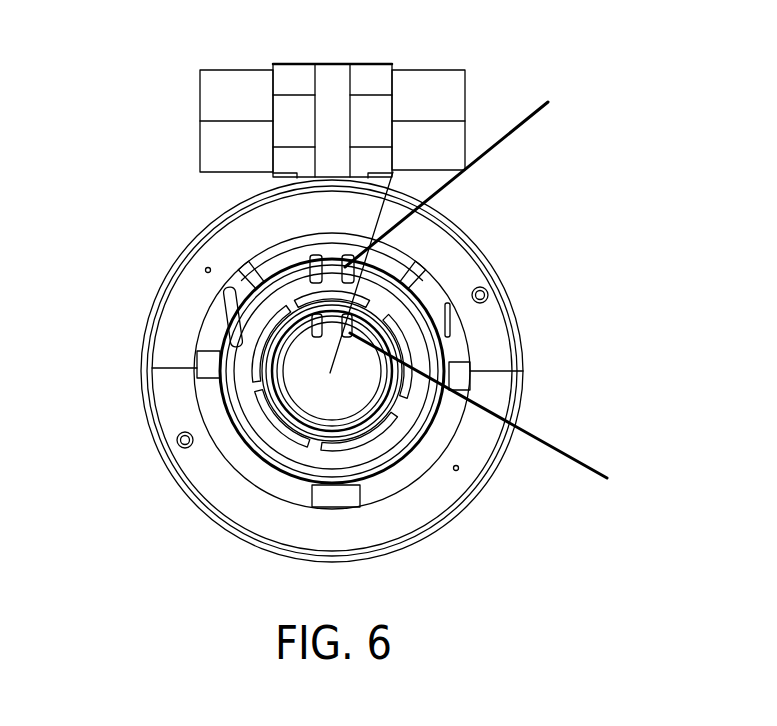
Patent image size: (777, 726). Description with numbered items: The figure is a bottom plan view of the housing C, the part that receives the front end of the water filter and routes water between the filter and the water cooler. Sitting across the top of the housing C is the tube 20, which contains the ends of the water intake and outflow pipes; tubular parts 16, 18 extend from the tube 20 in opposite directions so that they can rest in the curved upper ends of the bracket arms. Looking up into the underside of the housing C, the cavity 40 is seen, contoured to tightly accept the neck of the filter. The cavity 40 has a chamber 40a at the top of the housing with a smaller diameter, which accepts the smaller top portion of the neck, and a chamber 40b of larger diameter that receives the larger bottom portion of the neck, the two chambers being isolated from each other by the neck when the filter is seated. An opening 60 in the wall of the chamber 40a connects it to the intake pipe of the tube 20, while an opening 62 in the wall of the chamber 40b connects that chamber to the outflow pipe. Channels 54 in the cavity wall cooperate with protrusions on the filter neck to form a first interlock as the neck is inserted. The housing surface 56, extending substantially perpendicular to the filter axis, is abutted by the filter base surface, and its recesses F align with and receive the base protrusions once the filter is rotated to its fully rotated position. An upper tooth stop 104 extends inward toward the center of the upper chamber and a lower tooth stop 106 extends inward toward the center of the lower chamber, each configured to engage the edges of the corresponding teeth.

The tubular part 16 is at (200, 98).
The tubular part 18 is at (443, 97).
The tube 20 is at (388, 66).
The cavity 40 is at (420, 255).
The chamber 40a is at (313, 400).
The chamber 40b is at (293, 407).
The channel 54 is at (487, 293).
The housing surface 56 is at (237, 243).
The opening 60 is at (352, 270).
The opening 62 is at (333, 258).
The upper tooth stop 104 is at (480, 179).
The lower tooth stop 106 is at (508, 423).
The recess F is at (160, 320).
The housing C is at (135, 368).